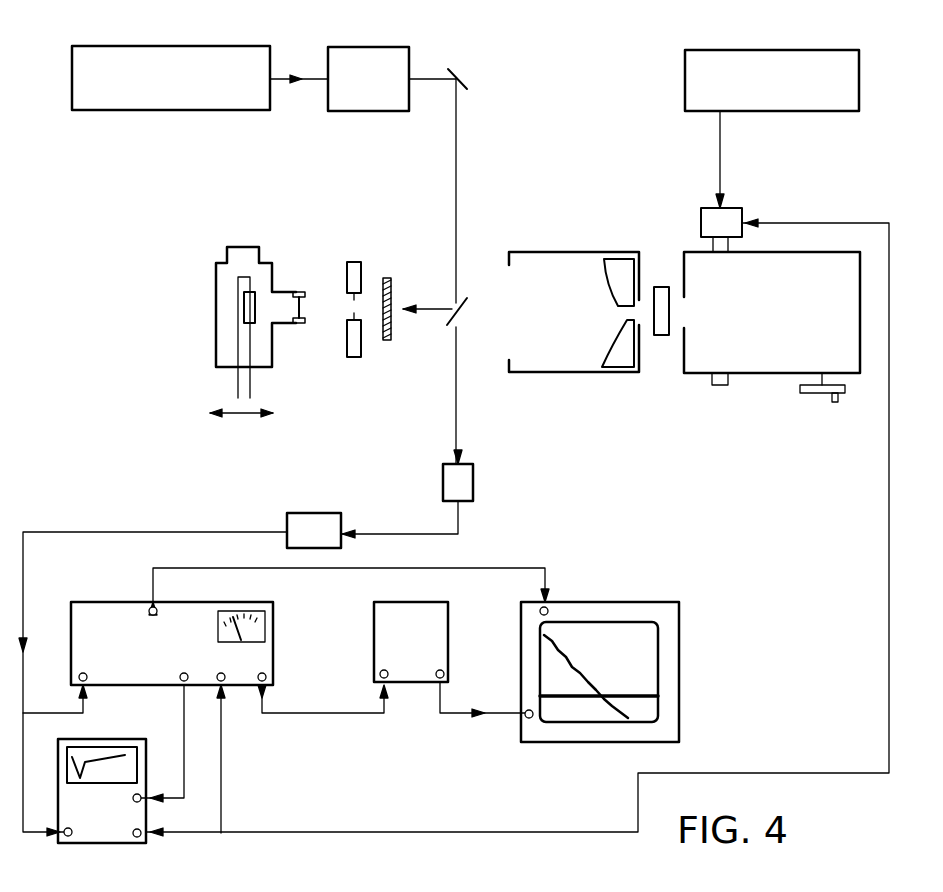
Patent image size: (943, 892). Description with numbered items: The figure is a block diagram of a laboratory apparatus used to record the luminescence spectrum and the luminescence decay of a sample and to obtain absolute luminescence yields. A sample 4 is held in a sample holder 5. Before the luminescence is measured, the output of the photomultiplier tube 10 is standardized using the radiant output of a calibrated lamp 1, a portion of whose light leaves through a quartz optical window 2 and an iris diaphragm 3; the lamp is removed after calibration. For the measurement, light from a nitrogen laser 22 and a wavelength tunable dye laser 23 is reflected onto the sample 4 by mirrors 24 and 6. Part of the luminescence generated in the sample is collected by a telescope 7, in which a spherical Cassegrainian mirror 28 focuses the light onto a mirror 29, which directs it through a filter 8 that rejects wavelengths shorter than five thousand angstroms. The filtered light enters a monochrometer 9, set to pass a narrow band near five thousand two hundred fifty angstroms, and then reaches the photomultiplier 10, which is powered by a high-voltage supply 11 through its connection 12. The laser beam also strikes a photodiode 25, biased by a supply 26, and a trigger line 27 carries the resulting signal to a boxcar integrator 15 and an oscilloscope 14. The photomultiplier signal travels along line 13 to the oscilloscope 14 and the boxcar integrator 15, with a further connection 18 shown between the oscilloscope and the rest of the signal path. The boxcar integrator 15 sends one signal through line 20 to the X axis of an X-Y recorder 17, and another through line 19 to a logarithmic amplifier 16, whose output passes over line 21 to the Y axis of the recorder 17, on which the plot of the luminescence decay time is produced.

The calibrated lamp 1 is at (216, 327).
The quartz optical window 2 is at (304, 305).
The iris diaphragm 3 is at (356, 262).
The sample 4 is at (393, 312).
The sample holder 5 is at (393, 283).
The mirror 6 is at (463, 305).
The telescope 7 is at (577, 372).
The filter 8 is at (661, 287).
The monochrometer 9 is at (767, 373).
The photomultiplier tube 10 is at (742, 210).
The high-voltage supply 11 is at (812, 111).
The supply line 12 is at (718, 143).
The line 13 is at (888, 488).
The oscilloscope 14 is at (110, 739).
The boxcar integrator 15 is at (273, 645).
The logarithmic amplifier 16 is at (415, 683).
The X-Y recorder 17 is at (680, 638).
The connection line 18 is at (221, 770).
The line 19 is at (318, 703).
The line 20 is at (360, 568).
The line 21 is at (495, 720).
The nitrogen laser 22 is at (178, 112).
The wavelength tunable dye laser 23 is at (361, 111).
The mirror 24 is at (467, 80).
The photodiode 25 is at (473, 475).
The supply 26 is at (315, 513).
The trigger line 27 is at (170, 532).
The spherical Cassegrainian mirror 28 is at (604, 275).
The mirror 29 is at (508, 300).